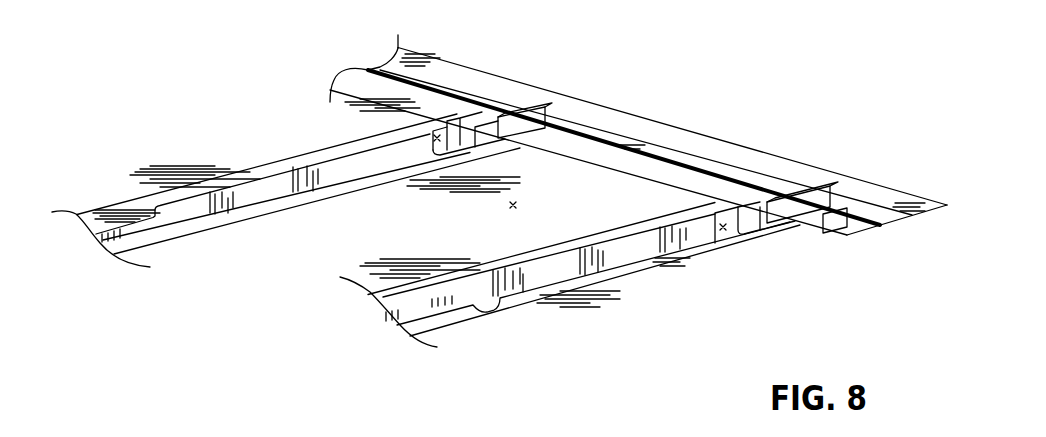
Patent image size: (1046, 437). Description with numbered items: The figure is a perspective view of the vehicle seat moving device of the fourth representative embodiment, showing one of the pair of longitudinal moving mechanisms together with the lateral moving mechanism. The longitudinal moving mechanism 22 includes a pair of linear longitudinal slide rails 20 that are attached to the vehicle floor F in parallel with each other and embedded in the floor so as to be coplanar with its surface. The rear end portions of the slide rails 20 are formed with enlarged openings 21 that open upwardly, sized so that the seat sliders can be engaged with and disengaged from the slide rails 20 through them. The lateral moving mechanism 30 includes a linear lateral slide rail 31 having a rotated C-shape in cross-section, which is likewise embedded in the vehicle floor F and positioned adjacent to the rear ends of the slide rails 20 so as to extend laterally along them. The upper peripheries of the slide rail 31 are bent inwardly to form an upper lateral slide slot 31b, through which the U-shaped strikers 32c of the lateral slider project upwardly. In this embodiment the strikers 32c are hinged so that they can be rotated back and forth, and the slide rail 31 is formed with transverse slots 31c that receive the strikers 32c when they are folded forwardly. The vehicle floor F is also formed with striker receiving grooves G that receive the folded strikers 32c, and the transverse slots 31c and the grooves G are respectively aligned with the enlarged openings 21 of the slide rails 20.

The longitudinal slide rails 20 is at (426, 203).
The enlarged openings 21 is at (272, 186).
The longitudinal moving mechanism 22 is at (537, 337).
The lateral moving mechanism 30 is at (638, 135).
The lateral slide rail 31 is at (676, 134).
The upper lateral slide slot 31b is at (704, 160).
The transverse slots 31c is at (505, 115).
The U-shaped strikers 32c is at (452, 128).
The striker receiving grooves G is at (434, 137).
The vehicle floor F is at (511, 206).